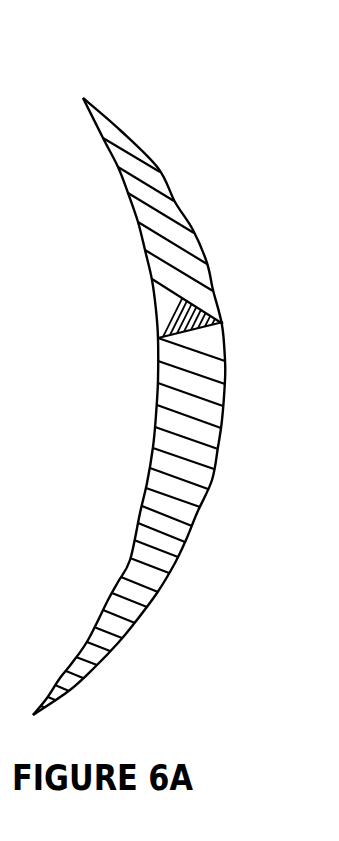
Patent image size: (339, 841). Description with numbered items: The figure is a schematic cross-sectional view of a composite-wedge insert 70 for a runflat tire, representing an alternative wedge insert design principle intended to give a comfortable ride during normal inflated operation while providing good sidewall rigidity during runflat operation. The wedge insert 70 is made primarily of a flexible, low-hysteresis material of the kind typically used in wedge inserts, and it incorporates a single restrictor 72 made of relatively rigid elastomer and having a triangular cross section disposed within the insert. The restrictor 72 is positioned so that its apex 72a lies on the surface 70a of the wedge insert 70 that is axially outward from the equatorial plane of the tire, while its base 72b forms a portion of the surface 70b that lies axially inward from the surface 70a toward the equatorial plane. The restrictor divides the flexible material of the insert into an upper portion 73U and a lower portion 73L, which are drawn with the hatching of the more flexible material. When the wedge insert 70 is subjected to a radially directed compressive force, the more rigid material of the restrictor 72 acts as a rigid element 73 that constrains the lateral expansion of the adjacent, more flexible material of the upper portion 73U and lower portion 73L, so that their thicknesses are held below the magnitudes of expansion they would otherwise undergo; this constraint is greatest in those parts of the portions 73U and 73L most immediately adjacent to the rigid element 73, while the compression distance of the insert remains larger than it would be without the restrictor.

The composite-wedge insert 70 is at (161, 376).
The surface of the wedge insert 70a is at (218, 455).
The surface of the wedge insert 70b is at (153, 459).
The restrictor 72 is at (181, 322).
The apex 72a is at (222, 325).
The base 72b is at (152, 313).
The rigid element 73 is at (153, 262).
The upper portion of the wedge insert 73U is at (160, 205).
The lower portion of the wedge insert 73L is at (158, 558).